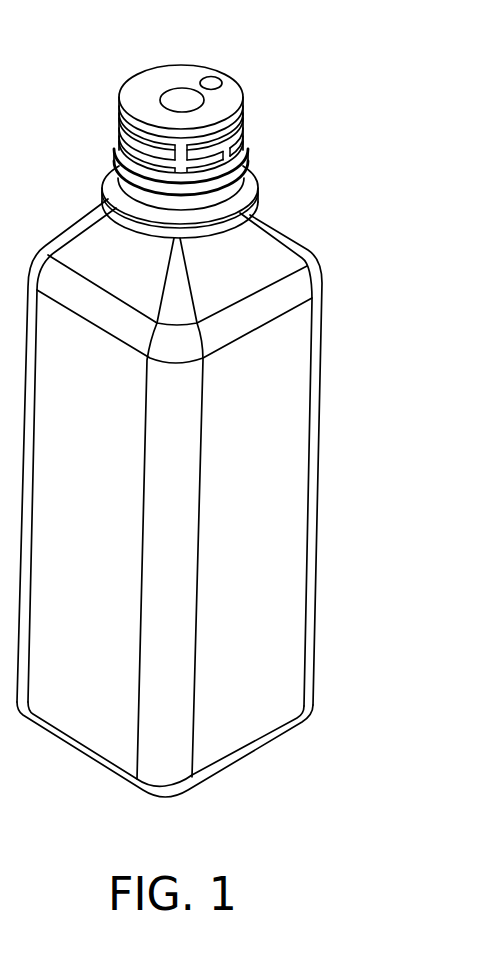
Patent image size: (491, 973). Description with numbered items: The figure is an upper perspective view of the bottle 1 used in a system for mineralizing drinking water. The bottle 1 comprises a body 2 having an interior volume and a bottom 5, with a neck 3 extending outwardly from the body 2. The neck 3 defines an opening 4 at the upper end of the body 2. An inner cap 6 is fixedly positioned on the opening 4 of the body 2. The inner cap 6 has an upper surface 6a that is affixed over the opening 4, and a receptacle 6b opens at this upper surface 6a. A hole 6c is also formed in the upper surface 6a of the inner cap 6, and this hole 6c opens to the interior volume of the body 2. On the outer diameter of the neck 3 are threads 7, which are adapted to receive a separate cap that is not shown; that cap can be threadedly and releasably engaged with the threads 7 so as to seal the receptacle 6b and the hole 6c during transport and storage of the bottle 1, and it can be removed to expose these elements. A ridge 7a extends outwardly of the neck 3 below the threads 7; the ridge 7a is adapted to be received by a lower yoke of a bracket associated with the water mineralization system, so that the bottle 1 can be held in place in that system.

The bottle 1 is at (325, 115).
The body 2 is at (292, 413).
The neck 3 is at (247, 145).
The opening 4 is at (242, 97).
The bottom 5 is at (278, 744).
The inner cap 6 is at (165, 73).
The upper surface 6a is at (142, 87).
The receptacle 6b is at (170, 102).
The hole 6c is at (210, 82).
The threads 7 is at (247, 127).
The ridge 7a is at (253, 187).